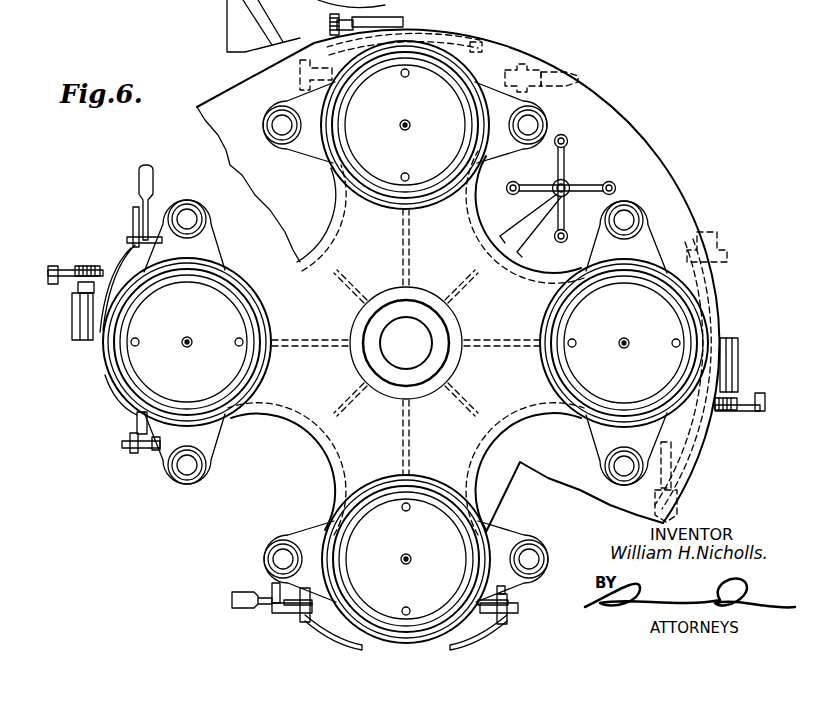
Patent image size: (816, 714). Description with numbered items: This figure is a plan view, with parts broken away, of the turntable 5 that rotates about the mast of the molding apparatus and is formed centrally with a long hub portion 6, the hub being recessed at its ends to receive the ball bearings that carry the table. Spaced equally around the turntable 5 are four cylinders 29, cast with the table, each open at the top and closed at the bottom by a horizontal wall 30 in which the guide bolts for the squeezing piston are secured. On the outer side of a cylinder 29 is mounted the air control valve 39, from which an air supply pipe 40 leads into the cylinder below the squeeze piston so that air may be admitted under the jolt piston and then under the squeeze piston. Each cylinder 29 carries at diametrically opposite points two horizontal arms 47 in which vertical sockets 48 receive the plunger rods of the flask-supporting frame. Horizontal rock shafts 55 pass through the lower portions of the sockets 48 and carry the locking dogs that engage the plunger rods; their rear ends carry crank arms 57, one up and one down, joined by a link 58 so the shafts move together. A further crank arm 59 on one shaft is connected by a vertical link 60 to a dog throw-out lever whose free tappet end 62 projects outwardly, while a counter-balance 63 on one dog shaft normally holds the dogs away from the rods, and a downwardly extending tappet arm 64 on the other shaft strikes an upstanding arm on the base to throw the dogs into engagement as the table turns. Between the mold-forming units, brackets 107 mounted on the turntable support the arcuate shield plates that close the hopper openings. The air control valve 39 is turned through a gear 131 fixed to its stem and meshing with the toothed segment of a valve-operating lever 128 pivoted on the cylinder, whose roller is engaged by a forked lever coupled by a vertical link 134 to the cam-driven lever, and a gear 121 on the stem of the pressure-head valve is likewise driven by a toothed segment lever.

The turntable 5 is at (297, 262).
The hub portion 6 is at (420, 300).
The cylinder 29 is at (430, 48).
The horizontal wall 30 is at (390, 167).
The air control valve 39 is at (398, 18).
The air supply pipe 40 is at (407, 128).
The arms 47 is at (317, 148).
The vertical sockets 48 is at (272, 119).
The rock shafts 55 is at (125, 240).
The crank arm 57 is at (137, 452).
The link 58 is at (473, 46).
The crank arm 59 is at (288, 612).
The vertical link 60 is at (134, 211).
The tappet end 62 is at (150, 176).
The counter-balance 63 is at (354, 86).
The tappet arm 64 is at (297, 90).
The brackets 107 is at (563, 170).
The gear 121 is at (275, 1).
The valve-operating lever 128 is at (63, 268).
The gear 131 is at (82, 258).
The vertical link 134 is at (331, 22).